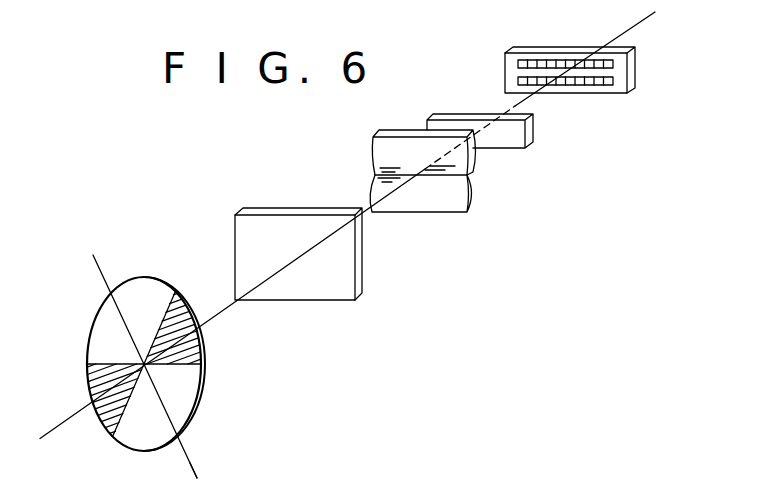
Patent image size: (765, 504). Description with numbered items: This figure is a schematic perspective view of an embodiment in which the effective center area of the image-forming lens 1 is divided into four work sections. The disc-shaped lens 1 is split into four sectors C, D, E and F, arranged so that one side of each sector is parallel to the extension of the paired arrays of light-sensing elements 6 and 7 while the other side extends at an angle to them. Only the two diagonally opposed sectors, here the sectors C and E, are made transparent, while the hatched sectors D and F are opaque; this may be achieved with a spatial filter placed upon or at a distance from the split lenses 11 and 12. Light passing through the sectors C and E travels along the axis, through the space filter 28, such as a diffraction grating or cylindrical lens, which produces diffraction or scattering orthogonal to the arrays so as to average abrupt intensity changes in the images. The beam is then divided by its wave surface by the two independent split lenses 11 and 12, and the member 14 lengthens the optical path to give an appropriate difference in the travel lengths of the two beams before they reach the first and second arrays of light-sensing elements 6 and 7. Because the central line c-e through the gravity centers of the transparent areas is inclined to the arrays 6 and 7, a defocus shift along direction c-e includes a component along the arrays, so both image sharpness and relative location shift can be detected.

The image-forming lens 1 is at (210, 387).
The first array of light-sensing elements 6 is at (542, 62).
The second array of light-sensing elements 7 is at (572, 85).
The split lens 11 is at (390, 148).
The split lens 12 is at (425, 203).
The member for lengthening the optical path length 14 is at (463, 120).
The space filter 28 is at (360, 300).
The sector C is at (140, 297).
The sector D is at (192, 302).
The sector E is at (147, 430).
The sector F is at (102, 430).
The end of central line c-e c is at (141, 357).
The end of central line c- e is at (199, 483).